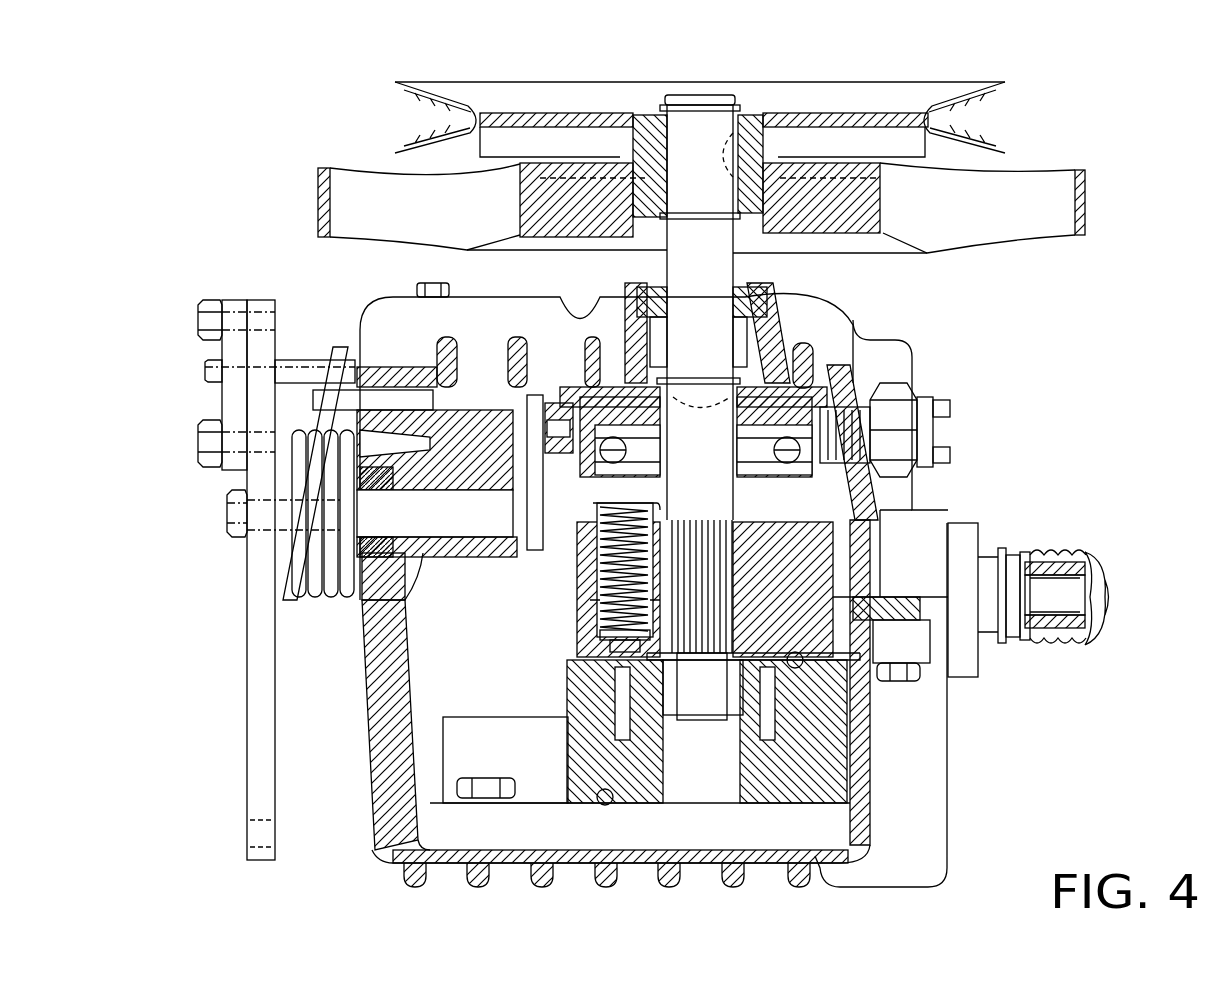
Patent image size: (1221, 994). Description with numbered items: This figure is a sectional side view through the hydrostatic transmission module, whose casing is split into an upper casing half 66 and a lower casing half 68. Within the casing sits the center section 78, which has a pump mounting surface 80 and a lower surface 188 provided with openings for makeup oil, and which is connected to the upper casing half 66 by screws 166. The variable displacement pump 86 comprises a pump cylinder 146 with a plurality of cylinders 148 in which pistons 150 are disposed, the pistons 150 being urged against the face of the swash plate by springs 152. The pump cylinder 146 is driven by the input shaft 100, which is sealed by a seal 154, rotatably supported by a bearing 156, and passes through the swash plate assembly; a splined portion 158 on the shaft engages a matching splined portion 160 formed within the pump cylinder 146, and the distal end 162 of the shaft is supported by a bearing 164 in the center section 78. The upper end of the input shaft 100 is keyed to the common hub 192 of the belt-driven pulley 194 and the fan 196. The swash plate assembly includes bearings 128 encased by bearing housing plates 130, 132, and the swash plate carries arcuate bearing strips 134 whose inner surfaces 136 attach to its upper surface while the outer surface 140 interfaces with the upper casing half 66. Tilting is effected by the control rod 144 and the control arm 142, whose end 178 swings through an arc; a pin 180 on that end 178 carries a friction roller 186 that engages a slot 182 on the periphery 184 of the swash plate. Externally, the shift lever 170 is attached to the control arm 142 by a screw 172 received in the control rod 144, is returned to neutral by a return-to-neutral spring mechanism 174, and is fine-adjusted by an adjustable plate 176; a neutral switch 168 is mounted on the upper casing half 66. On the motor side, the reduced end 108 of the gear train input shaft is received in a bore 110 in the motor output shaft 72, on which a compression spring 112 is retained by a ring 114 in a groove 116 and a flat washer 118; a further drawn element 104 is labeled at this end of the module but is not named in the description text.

The upper casing half 66 is at (887, 570).
The lower casing half 68 is at (867, 822).
The motor output shaft 72 is at (1060, 597).
The center section 78 is at (813, 800).
The pump mounting surface 80 is at (795, 668).
The variable displacement pump 86 is at (838, 523).
The input shaft 100 is at (723, 263).
The plate 104 is at (977, 523).
The reduced end 108 is at (1070, 603).
The bore 110 is at (1067, 592).
The compression spring 112 is at (1102, 647).
The ring 114 is at (1010, 562).
The groove 116 is at (1022, 555).
The flat washer 118 is at (1006, 650).
The bearings 128 is at (655, 452).
The bearing housing plate 130 is at (787, 470).
The bearing housing plate 132 is at (827, 470).
The arcuate bearing strips 134 is at (640, 360).
The inner surfaces 136 is at (580, 400).
The outer surface 140 is at (603, 385).
The control arm 142 is at (565, 478).
The control rod 144 is at (385, 525).
The pump cylinder 146 is at (880, 520).
The cylinders 148 is at (603, 570).
The pistons 150 is at (630, 470).
The springs 152 is at (608, 605).
The seal 154 is at (750, 283).
The bearing 156 is at (667, 330).
The splined portion 158 is at (705, 545).
The splined portion 160 is at (740, 597).
The distal end 162 is at (710, 707).
The bearing 164 is at (700, 690).
The screws 166 is at (480, 795).
The neutral switch 168 is at (952, 412).
The shift lever 170 is at (262, 735).
The screw 172 is at (245, 520).
The return-to-neutral spring mechanism 174 is at (314, 600).
The adjustable plate 176 is at (245, 315).
The end 178 is at (543, 403).
The pin 180 is at (560, 403).
The slot 182 is at (568, 415).
The periphery 184 is at (560, 478).
The friction roller 186 is at (557, 420).
The lower surface 188 is at (605, 805).
The common hub 192 is at (750, 118).
The pulley 194 is at (955, 95).
The fan 196 is at (1053, 237).